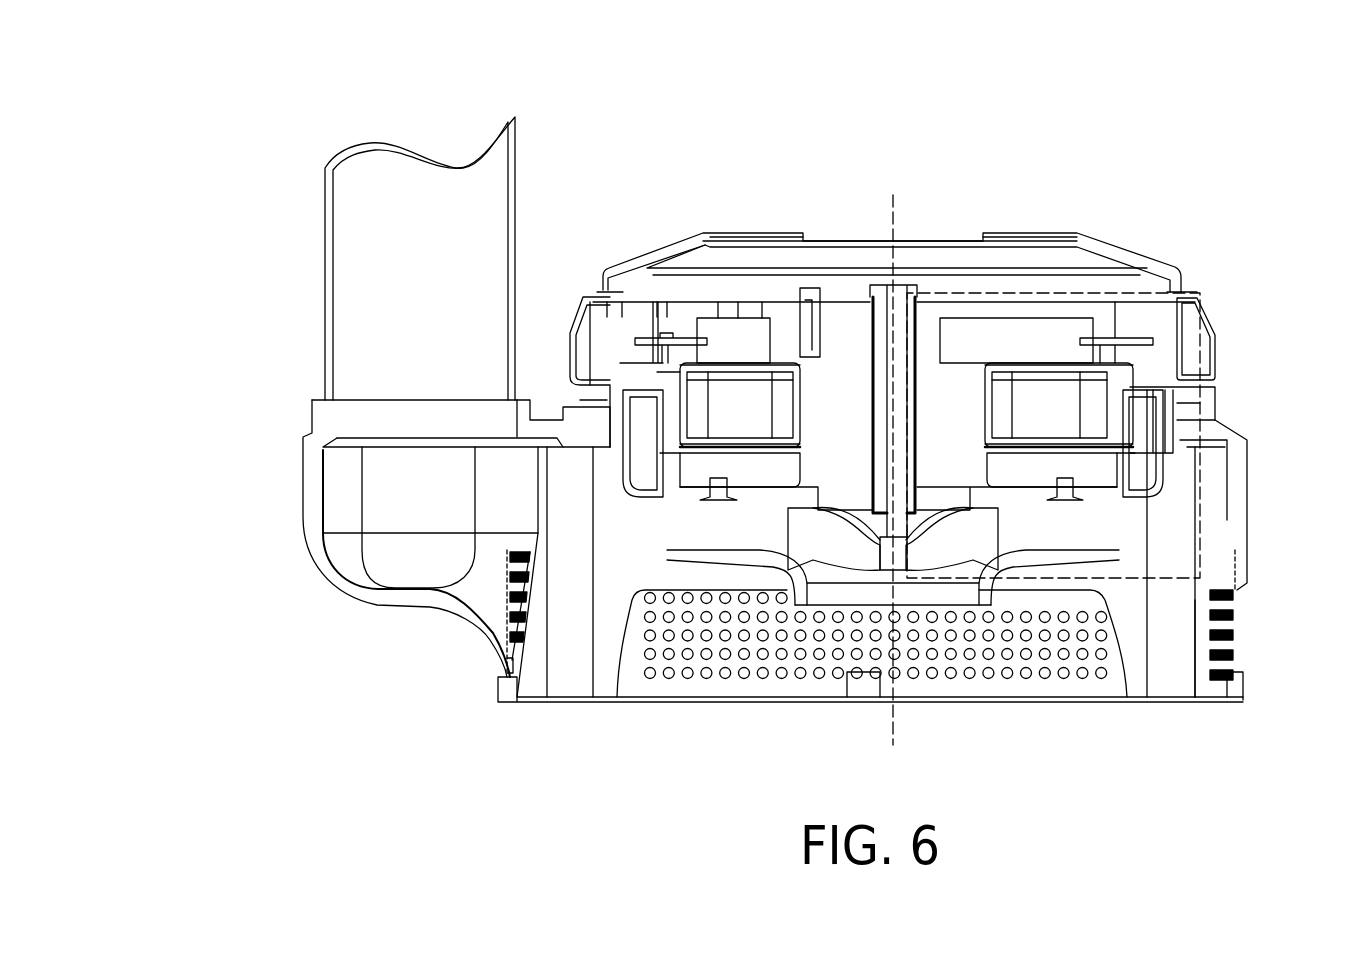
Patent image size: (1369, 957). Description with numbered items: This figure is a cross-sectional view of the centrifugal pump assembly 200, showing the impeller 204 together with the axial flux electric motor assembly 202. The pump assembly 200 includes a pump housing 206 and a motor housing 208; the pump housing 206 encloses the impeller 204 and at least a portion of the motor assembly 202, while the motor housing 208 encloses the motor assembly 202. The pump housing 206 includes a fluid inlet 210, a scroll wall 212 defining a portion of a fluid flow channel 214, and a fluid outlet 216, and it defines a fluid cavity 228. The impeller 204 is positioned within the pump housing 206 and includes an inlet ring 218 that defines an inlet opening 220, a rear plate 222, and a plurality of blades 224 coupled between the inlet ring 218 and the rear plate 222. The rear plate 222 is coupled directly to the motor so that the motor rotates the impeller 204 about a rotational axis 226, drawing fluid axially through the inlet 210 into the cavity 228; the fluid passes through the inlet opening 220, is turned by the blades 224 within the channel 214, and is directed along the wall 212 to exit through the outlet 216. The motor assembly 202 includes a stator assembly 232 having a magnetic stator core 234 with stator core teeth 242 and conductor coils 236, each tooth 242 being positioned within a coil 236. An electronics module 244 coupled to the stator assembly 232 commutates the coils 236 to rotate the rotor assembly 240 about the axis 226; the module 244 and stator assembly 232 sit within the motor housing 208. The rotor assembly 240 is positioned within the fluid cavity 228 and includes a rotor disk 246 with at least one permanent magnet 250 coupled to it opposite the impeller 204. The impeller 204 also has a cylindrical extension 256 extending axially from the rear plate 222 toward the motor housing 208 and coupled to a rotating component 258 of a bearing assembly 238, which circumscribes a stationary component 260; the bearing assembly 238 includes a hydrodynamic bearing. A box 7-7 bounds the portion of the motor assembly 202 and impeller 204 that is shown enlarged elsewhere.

The centrifugal pump assembly 200 is at (270, 165).
The fluid outlet 216 is at (412, 183).
The axial flux electric motor assembly 202 is at (578, 272).
The stator assembly 232 is at (636, 370).
The cylindrical extension 256 is at (820, 413).
The rotating component 258 is at (813, 410).
The stationary component 260 is at (880, 395).
The bearing assembly 238 is at (862, 348).
The magnetic stator core 234 is at (1000, 330).
The stator core teeth 242 is at (1030, 330).
The conductor coils 236 is at (1050, 380).
The electronics module 244 is at (1115, 340).
The box 7-7 is at (1217, 338).
The motor housing 208 is at (1208, 357).
The scroll wall 212 is at (322, 520).
The fluid flow channel 214 is at (381, 578).
The pump housing 206 is at (492, 643).
The permanent magnet 250 is at (680, 470).
The rotor assembly 240 is at (692, 490).
The rotor disk 246 is at (762, 483).
The blades 224 is at (1003, 542).
The rear plate 222 is at (1118, 508).
The inlet ring 218 is at (1208, 590).
The impeller 204 is at (698, 582).
The rotational axis 226 is at (888, 717).
The inlet opening 220 is at (948, 602).
The fluid inlet 210 is at (1061, 708).
The fluid cavity 228 is at (1182, 688).